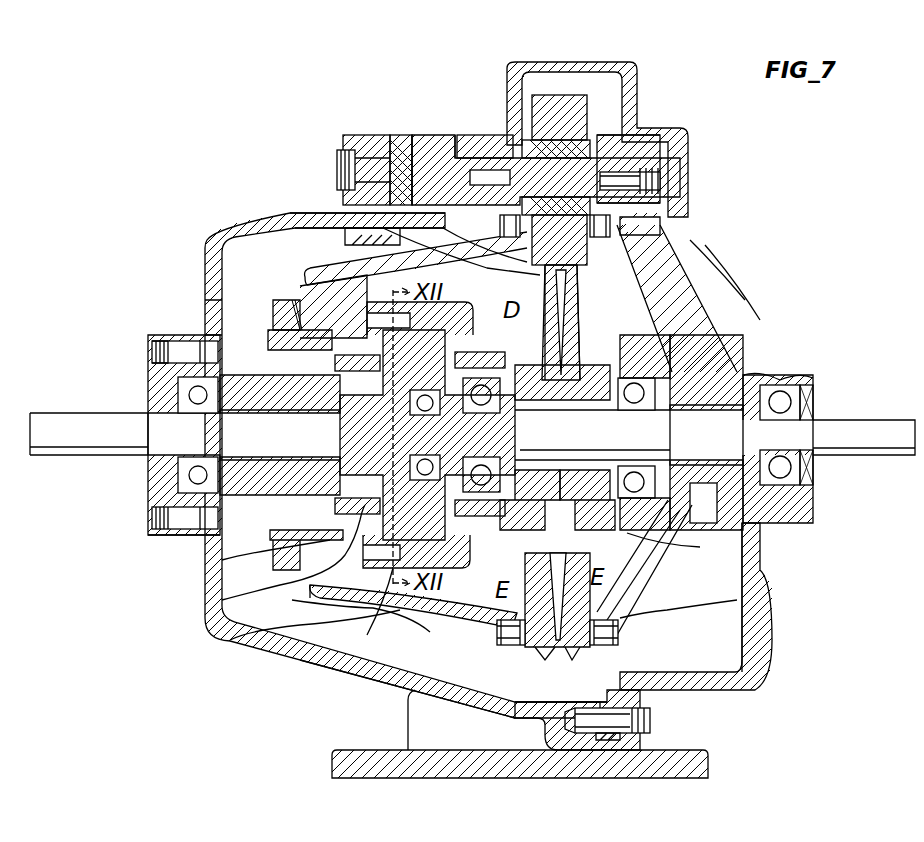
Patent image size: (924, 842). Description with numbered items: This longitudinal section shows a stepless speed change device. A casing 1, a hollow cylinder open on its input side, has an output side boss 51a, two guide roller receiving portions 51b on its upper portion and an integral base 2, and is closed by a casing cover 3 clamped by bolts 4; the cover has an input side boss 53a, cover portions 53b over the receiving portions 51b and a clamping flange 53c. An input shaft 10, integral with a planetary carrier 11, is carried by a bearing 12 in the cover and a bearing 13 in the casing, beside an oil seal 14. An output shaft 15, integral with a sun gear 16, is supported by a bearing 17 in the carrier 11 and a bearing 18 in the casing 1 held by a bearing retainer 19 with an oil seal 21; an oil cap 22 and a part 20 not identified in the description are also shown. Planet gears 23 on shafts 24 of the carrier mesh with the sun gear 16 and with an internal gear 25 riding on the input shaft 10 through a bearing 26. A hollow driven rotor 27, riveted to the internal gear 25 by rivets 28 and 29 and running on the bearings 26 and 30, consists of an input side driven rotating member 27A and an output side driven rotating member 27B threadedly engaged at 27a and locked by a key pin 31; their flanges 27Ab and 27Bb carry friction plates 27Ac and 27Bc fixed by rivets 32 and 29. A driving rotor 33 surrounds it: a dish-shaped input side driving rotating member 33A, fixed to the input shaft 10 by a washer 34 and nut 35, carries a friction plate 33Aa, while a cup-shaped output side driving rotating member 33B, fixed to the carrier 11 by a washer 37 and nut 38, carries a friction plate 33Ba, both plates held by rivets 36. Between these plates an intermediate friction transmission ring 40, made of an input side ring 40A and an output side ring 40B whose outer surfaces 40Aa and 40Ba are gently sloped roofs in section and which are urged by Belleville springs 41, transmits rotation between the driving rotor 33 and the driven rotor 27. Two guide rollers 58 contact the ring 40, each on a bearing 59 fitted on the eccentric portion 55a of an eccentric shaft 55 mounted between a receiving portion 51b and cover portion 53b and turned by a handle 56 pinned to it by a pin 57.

The casing 1 is at (205, 240).
The base 2 is at (685, 752).
The casing cover 3 is at (745, 368).
The bolts 4 is at (652, 722).
The input shaft 10 is at (870, 458).
The planetary carrier 11 is at (225, 612).
The bearing 12 is at (800, 478).
The bearing 13 is at (315, 363).
The oil seal 14 is at (800, 402).
The output shaft 15 is at (48, 460).
The sun gear 16 is at (222, 560).
The bearing 17 is at (435, 510).
The bearing 18 is at (178, 478).
The bearing retainer 19 is at (178, 535).
The bolt 20 is at (150, 518).
The oil seal 21 is at (178, 395).
The oil cap 22 is at (772, 630).
The planet gears 23 is at (280, 318).
The shafts 24 is at (205, 340).
The internal gear 25 is at (222, 640).
The bearing 26 is at (500, 405).
The driven rotor 27 is at (762, 570).
The input side driven rotating member 27A is at (760, 330).
The casing wall surface 27a is at (725, 320).
The flange 27Ab is at (735, 300).
The friction plate 27Ac is at (690, 300).
The output side driven rotating member 27B is at (300, 660).
The flange 27Bb is at (350, 218).
The friction plate 27Bc is at (360, 198).
The rivets 28 is at (590, 400).
The rivets 29 is at (545, 520).
The bearing 30 is at (735, 352).
The key pin 31 is at (680, 535).
The rivets 32 is at (590, 510).
The driving rotor 33 is at (657, 646).
The input side driving rotating member 33A is at (770, 528).
The friction plate 33Aa is at (770, 606).
The output side driving rotating member 33B is at (380, 672).
The friction plate 33Ba is at (495, 700).
The washer 34 is at (790, 372).
The nut 35 is at (805, 380).
The rivets 36 is at (608, 645).
The washer 37 is at (292, 320).
The nut 38 is at (215, 320).
The intermediate friction transmission ring 40 is at (558, 650).
The input side ring 40A is at (680, 252).
The outer surface 40Aa is at (715, 272).
The output side ring 40B is at (430, 135).
The outer surface 40Ba is at (410, 140).
The Belleville springs 41 is at (660, 238).
The boss 51a is at (262, 360).
The guide roller receiving portions 51b is at (560, 62).
The boss 53a is at (812, 392).
The cover portions 53b is at (690, 168).
The flange 53c is at (615, 740).
The eccentric shaft 55 is at (475, 135).
The eccentric portion 55a is at (640, 140).
The handle 56 is at (350, 140).
The pin 57 is at (390, 140).
The guide roller 58 is at (585, 100).
The bearing 59 is at (630, 125).